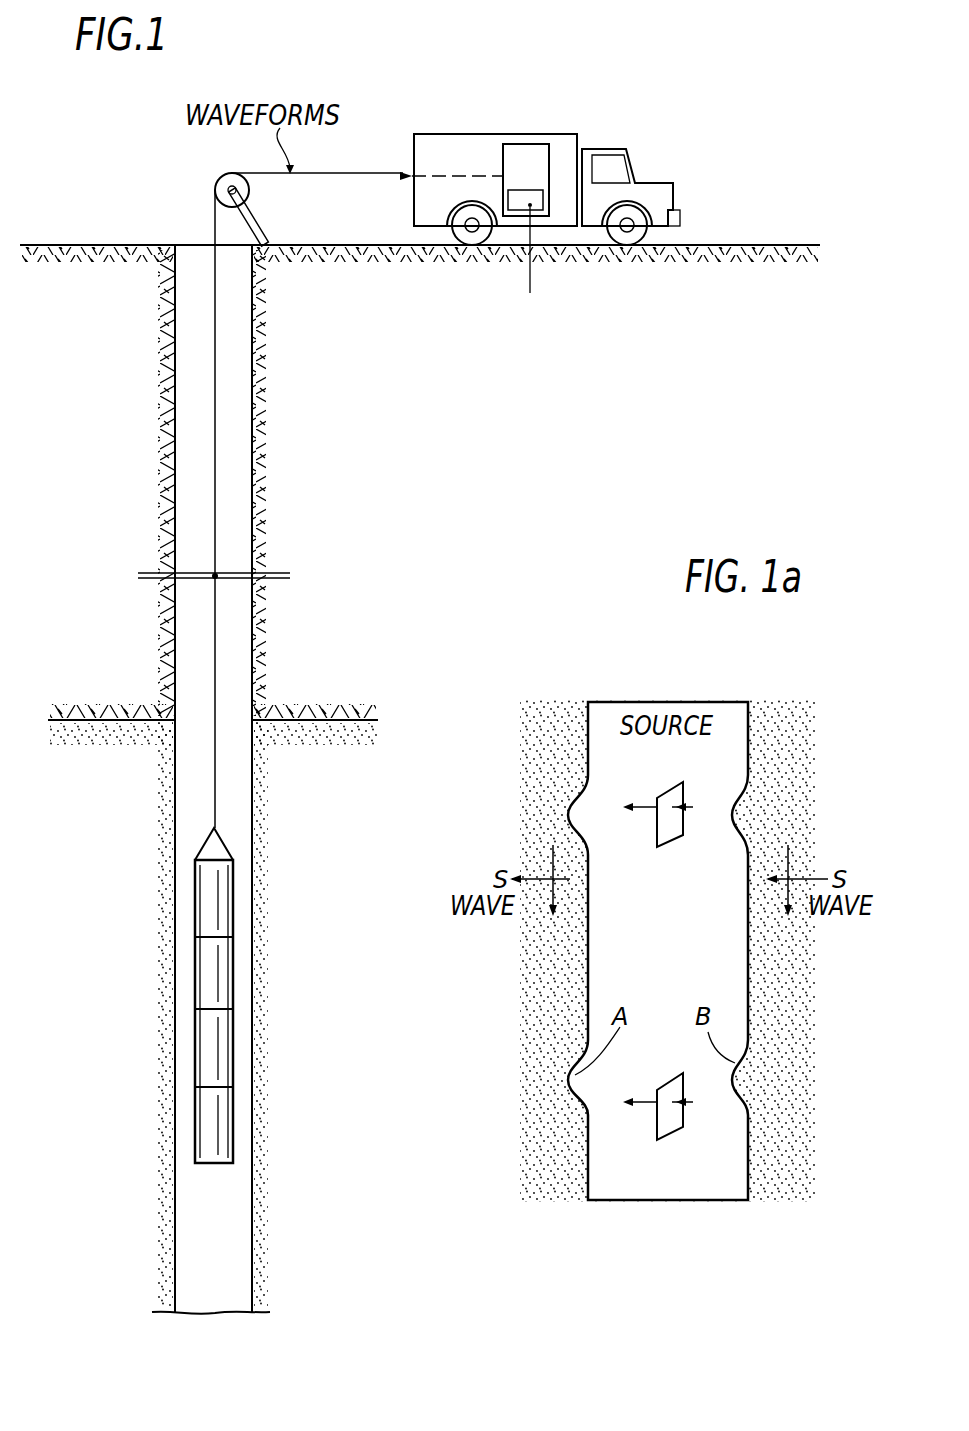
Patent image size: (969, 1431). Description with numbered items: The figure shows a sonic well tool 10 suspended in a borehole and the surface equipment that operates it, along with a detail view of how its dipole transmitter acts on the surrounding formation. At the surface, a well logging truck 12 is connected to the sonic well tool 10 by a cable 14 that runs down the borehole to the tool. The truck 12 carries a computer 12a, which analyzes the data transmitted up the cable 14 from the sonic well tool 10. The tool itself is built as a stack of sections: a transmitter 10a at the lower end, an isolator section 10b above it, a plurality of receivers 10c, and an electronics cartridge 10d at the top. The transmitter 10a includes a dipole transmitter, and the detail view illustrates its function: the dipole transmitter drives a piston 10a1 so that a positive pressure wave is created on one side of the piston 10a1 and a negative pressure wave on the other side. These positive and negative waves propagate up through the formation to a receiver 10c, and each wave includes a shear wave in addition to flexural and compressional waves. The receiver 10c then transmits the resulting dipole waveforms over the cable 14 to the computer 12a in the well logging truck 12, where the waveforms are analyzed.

In FIG. 1, the sonic well tool 10 is at (233, 995).
In FIG. 1, the transmitter 10a is at (233, 1127).
In FIG. 1, the isolator section 10b is at (233, 1050).
In FIG. 1, the receivers 10c is at (233, 980).
In FIG. 1a, the receivers 10c is at (681, 797).
In FIG. 1, the electronics cartridge 10d is at (233, 900).
In FIG. 1a, the piston 10a1 is at (676, 1118).
In FIG. 1, the well logging truck 12 is at (440, 135).
In FIG. 1, the computer 12a is at (525, 153).
In FIG. 1, the cable 14 is at (215, 455).